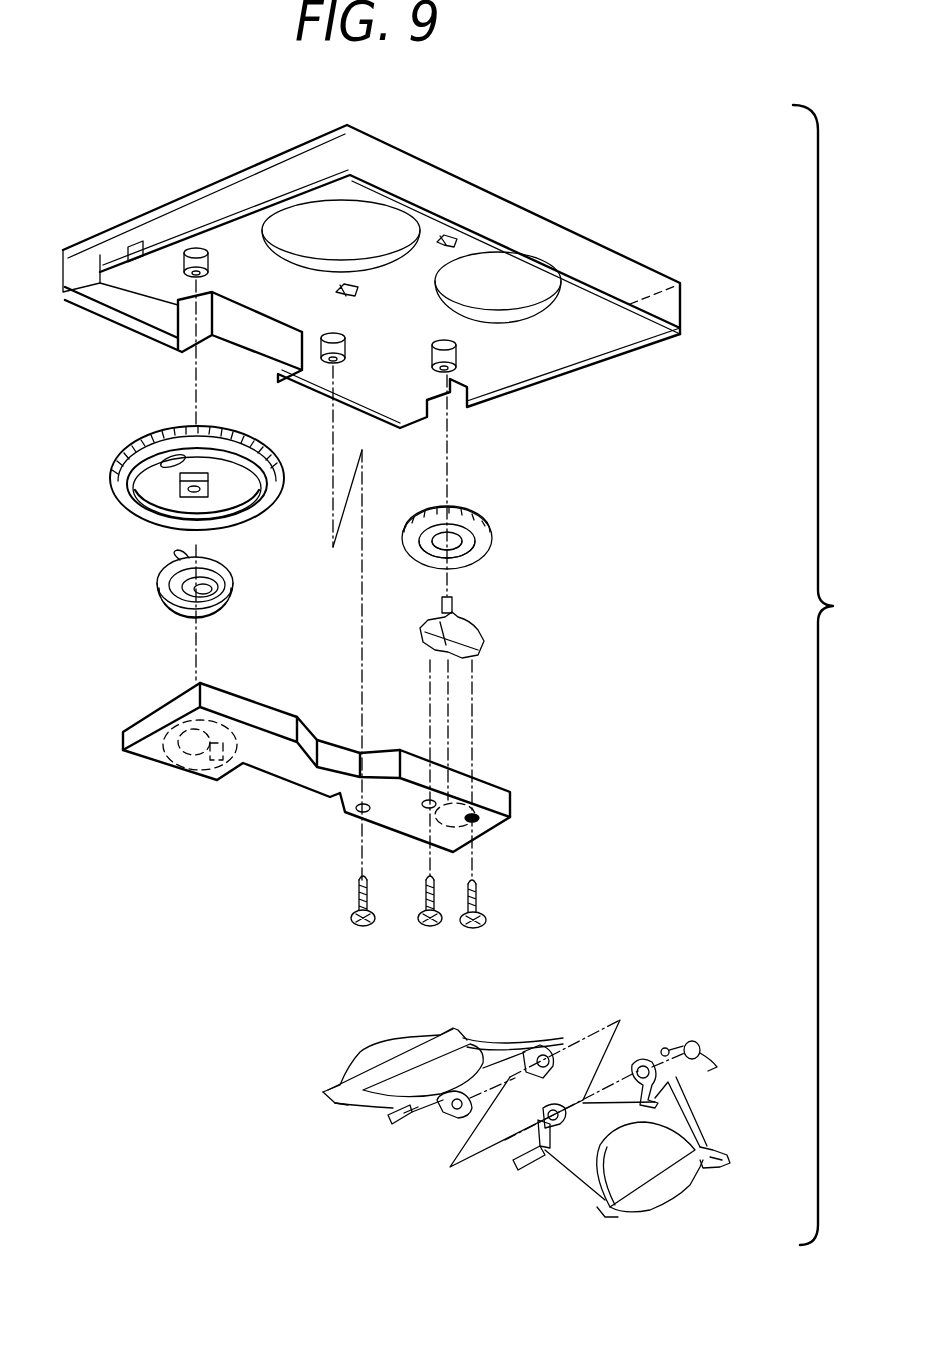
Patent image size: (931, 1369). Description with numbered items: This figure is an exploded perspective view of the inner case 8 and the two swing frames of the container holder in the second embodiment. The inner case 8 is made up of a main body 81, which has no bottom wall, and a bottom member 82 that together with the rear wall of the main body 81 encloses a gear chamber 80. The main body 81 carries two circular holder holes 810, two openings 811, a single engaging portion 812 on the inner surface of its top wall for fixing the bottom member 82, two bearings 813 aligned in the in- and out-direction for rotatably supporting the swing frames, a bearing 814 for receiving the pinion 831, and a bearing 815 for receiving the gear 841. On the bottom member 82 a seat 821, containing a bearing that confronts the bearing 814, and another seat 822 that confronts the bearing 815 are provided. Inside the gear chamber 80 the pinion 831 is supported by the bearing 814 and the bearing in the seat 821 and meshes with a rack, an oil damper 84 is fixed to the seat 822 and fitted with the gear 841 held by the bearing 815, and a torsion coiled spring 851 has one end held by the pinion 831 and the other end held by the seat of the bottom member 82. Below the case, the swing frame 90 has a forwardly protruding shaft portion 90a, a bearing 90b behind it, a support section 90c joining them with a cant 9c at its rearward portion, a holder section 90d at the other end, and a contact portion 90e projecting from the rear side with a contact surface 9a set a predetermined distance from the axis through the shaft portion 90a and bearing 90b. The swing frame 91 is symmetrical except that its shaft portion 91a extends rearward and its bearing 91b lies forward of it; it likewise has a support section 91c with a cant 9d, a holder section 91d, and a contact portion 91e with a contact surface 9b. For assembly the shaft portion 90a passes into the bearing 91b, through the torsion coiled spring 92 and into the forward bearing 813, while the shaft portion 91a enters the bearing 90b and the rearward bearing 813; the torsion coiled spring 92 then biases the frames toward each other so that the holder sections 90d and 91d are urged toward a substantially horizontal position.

The inner case 8 is at (487, 185).
The gear chamber 80 is at (266, 339).
The main body 81 is at (400, 168).
The circular holder hole 810 is at (284, 243).
The opening 811 is at (138, 250).
The engaging portion 812 is at (346, 352).
The bearing 813 is at (456, 240).
The bearing 814 is at (210, 264).
The bearing 815 is at (438, 338).
The pinion 831 is at (118, 472).
The gear 841 is at (494, 531).
The torsion coiled spring 851 is at (158, 584).
The oil damper 84 is at (482, 630).
The bottom member 82 is at (312, 802).
The seat 821 is at (146, 735).
The seat 822 is at (470, 803).
The swing frame 90 is at (420, 1109).
The shaft portion 90a is at (544, 1053).
The bearing 90b is at (455, 1114).
The support section 90c is at (493, 1042).
The holder section 90d is at (375, 1045).
The contact portion 90e is at (388, 1122).
The swing frame 91 is at (607, 1129).
The shaft portion 91a is at (547, 1167).
The bearing 91b is at (643, 1060).
The support section 91c is at (700, 1115).
The holder section 91d is at (680, 1195).
The contact portion 91e is at (540, 1146).
The torsion coiled spring 92 is at (720, 1058).
The contact surface 9a is at (410, 1114).
The contact surface 9b is at (514, 1162).
The cant 9c is at (367, 1106).
The cant 9d is at (600, 1217).